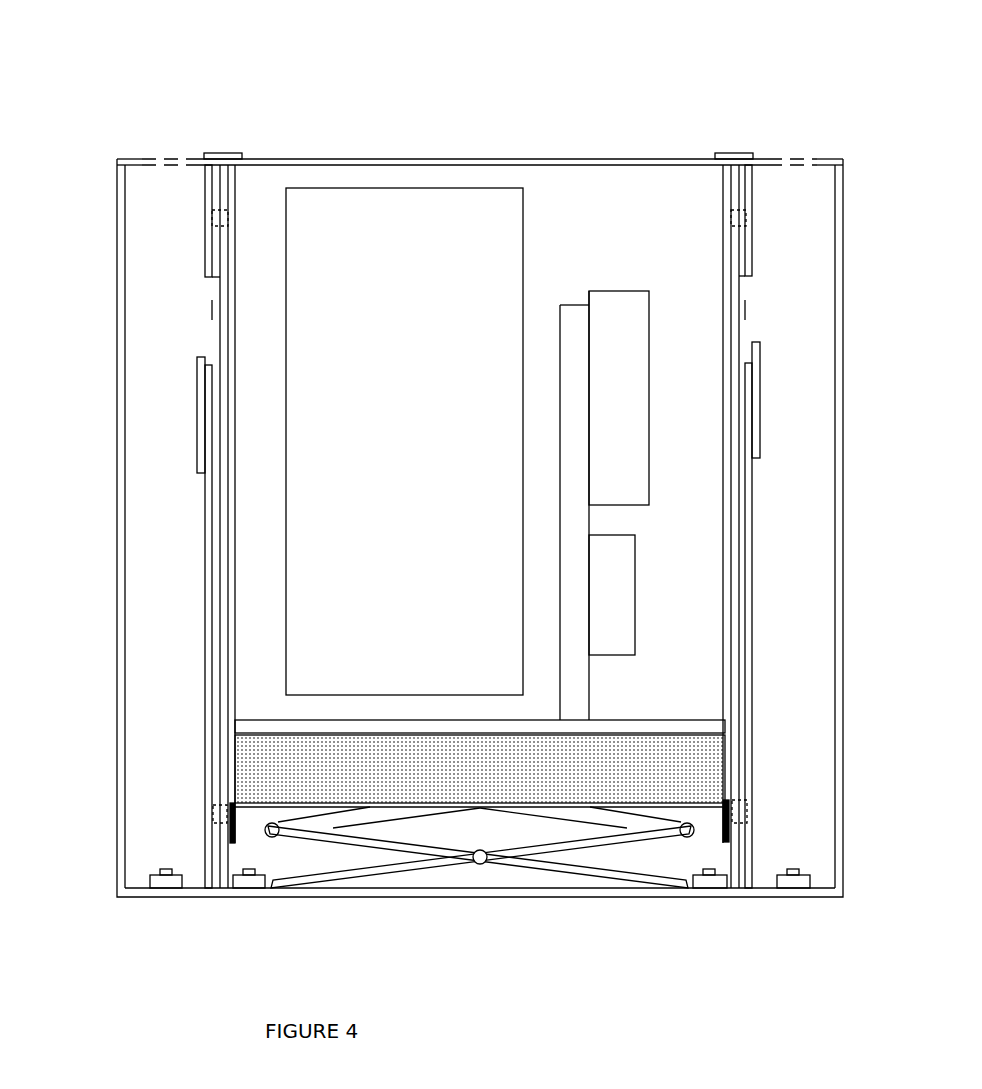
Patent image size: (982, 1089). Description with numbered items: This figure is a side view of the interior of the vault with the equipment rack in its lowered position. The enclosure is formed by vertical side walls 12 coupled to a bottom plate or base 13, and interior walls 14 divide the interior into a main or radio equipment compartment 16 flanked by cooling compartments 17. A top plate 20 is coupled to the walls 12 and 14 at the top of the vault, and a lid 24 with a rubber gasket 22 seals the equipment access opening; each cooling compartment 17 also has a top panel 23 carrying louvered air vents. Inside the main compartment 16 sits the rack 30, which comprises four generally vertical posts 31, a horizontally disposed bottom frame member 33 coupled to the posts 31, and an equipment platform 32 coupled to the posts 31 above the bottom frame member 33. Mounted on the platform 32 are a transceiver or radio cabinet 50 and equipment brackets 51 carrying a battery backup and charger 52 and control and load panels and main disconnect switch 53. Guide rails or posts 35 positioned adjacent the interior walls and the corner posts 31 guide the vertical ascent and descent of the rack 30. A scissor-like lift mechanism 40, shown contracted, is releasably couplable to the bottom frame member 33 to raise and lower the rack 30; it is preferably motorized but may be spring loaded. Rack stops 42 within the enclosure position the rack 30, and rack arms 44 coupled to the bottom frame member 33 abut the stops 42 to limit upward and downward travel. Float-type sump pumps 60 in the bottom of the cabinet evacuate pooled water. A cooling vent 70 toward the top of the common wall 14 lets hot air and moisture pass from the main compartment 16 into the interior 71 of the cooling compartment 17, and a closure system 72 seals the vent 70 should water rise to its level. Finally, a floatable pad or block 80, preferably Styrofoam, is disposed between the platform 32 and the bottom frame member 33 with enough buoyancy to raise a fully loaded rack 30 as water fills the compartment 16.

The vertical side walls 12 is at (117, 308).
The bottom plate or base 13 is at (527, 890).
The interior wall 14 is at (205, 518).
The main or radio equipment compartment 16 is at (543, 177).
The cooling compartment 17 is at (140, 388).
The top plate 20 is at (208, 155).
The rubber gasket 22 is at (226, 153).
The top panel 23 is at (117, 157).
The lid 24 is at (340, 158).
The rack 30 is at (245, 822).
The posts 31 is at (235, 272).
The equipment platform 32 is at (612, 718).
The bottom frame member 33 is at (698, 808).
The guide rails or posts 35 is at (220, 296).
The scissor-like lift mechanism 40 is at (360, 868).
The rack stops 42 is at (222, 216).
The rack arms 44 is at (222, 790).
The transceiver or radio cabinet 50 is at (404, 441).
The equipment brackets 51 is at (561, 303).
The battery backup and charger 52 is at (612, 595).
The control and load panels and main disconnect switch 53 is at (619, 398).
The float-type sump pump 60 is at (142, 877).
The cooling vent 70 is at (212, 306).
The interior of the cooling compartment 71 is at (479, 641).
The closure system 72 is at (180, 398).
The floatable pad or block 80 is at (480, 771).